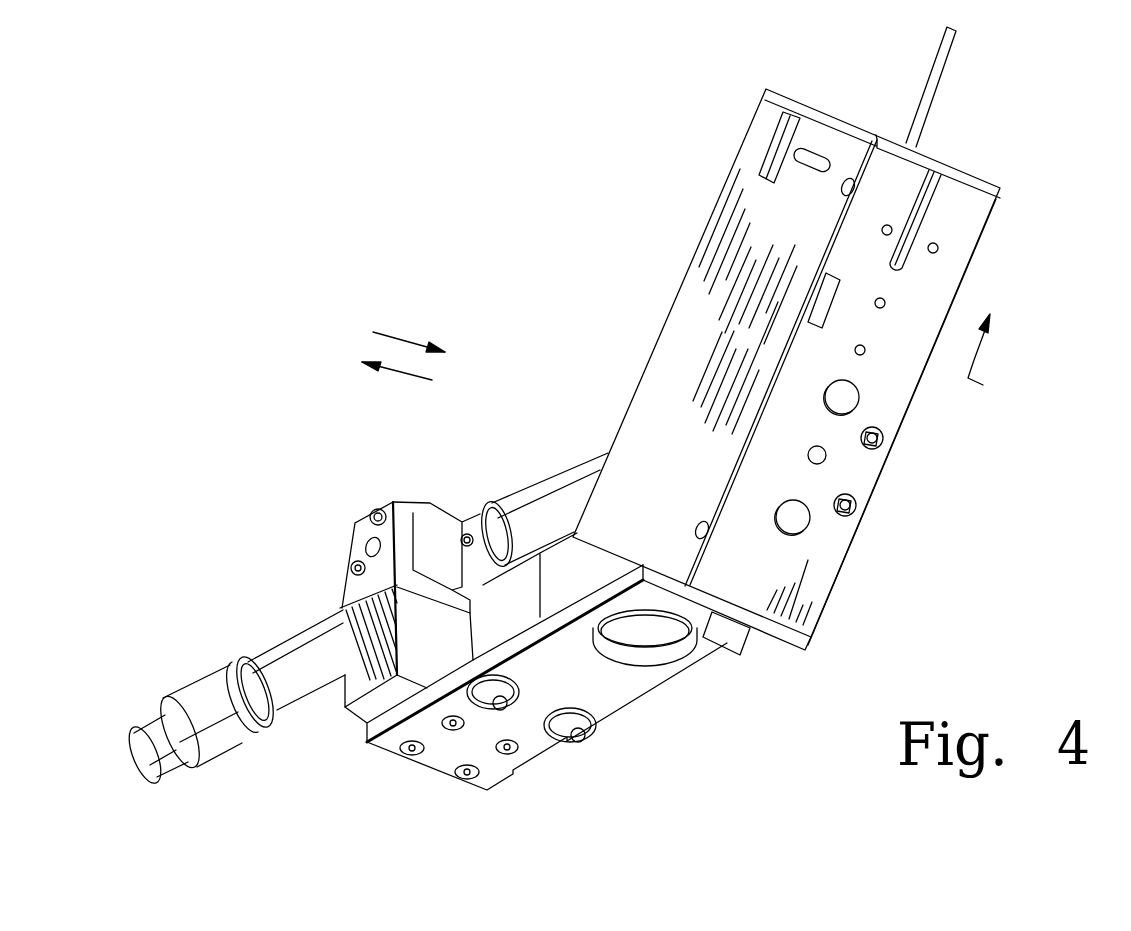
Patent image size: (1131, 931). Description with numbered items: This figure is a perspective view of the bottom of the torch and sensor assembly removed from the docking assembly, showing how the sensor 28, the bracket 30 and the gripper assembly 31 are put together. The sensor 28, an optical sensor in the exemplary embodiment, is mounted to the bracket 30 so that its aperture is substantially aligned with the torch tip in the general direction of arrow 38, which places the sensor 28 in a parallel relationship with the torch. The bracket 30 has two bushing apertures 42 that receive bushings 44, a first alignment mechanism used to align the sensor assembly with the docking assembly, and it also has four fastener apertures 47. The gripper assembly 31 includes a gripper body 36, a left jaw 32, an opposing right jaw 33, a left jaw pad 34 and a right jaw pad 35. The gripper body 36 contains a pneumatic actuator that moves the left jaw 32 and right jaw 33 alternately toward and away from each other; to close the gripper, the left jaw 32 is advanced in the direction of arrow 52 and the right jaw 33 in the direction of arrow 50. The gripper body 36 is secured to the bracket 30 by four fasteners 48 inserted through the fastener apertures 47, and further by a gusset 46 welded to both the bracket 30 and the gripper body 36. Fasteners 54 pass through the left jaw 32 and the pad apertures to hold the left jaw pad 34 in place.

The sensor 28 is at (670, 313).
The bracket 30 is at (660, 688).
The gripper assembly 31 is at (382, 473).
The left jaw 32 is at (355, 540).
The right jaw 33 is at (548, 600).
The left jaw pad 34 is at (447, 503).
The right jaw pad 35 is at (547, 615).
The gripper body 36 is at (338, 705).
The arrow 38 is at (958, 214).
The bushing apertures 42 is at (500, 707).
The bushings 44 is at (520, 707).
The gusset 46 is at (470, 628).
The fastener apertures 47 is at (470, 778).
The fasteners 48 is at (410, 750).
The arrow 50 is at (430, 380).
The arrow 52 is at (380, 333).
The fasteners 54 is at (372, 512).